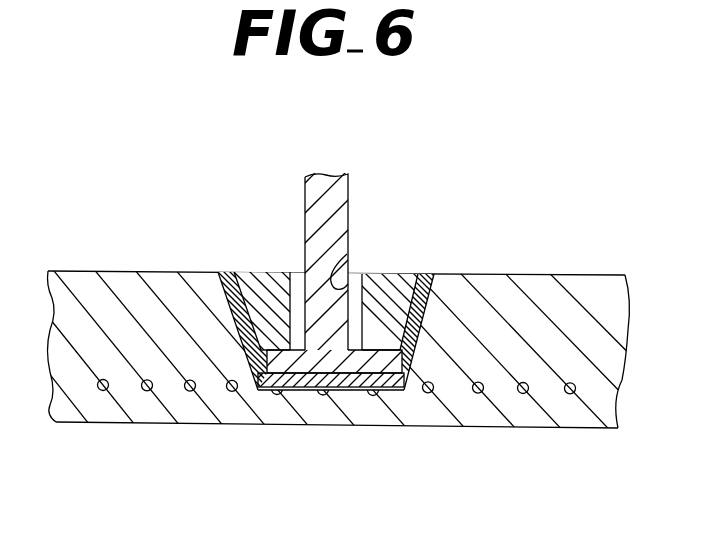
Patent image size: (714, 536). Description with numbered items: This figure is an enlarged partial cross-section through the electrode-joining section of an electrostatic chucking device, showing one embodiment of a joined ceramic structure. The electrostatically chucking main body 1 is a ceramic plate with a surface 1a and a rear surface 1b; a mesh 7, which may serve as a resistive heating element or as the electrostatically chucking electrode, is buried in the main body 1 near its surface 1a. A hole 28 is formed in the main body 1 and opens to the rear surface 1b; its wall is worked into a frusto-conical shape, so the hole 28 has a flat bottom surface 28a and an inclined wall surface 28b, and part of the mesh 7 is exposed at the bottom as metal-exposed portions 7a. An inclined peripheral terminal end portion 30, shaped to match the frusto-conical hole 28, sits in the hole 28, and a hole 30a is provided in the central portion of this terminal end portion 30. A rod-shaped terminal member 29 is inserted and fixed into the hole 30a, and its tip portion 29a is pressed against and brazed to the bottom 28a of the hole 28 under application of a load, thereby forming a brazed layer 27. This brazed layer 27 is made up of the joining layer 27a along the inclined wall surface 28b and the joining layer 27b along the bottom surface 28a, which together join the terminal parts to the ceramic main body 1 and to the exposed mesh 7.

The electrostatically chucking main body 1 is at (585, 342).
The surface 1a is at (150, 424).
The rear surface 1b is at (137, 270).
The mesh 7 is at (103, 391).
The metal-exposed portions 7a is at (378, 392).
The brazed layer 27 is at (441, 289).
The joining layer 27a is at (416, 332).
The joining layer 27b is at (267, 384).
The hole 28 is at (258, 305).
The flat bottom surface 28a is at (350, 388).
The inclined wall surface 28b is at (247, 280).
The rod-shaped terminal member 29 is at (338, 202).
The tip portion 29a is at (290, 376).
The inclined peripheral terminal end portion 30 is at (277, 288).
The hole 30a is at (347, 254).